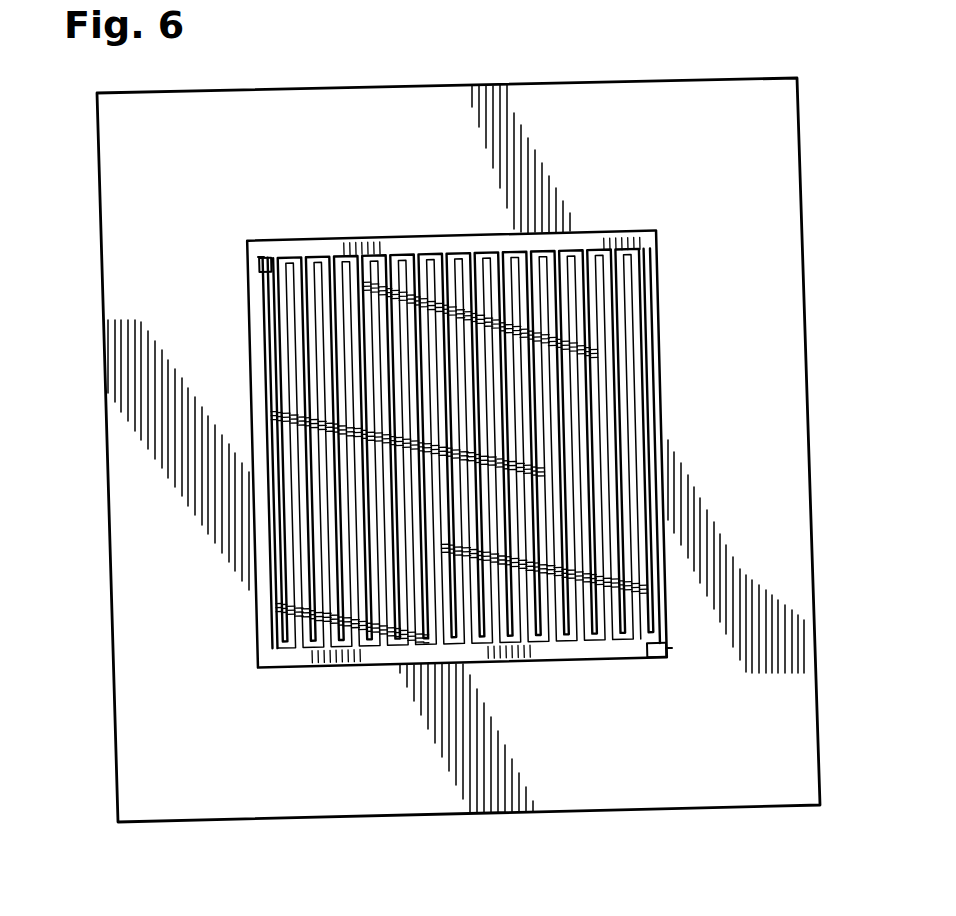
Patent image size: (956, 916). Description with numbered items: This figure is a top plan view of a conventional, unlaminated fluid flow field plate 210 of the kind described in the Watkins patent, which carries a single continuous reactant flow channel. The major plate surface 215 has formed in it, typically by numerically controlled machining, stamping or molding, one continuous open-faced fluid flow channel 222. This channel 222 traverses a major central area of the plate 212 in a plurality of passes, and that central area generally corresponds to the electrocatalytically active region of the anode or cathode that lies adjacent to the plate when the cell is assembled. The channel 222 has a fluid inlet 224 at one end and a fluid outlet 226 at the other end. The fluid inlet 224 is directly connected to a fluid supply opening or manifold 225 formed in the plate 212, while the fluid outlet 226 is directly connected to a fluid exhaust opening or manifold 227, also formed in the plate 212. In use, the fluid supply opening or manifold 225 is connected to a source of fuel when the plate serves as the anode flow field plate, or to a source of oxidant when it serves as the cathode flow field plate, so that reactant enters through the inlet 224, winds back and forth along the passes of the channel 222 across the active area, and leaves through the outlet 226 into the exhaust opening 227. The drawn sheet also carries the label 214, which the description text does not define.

The fluid flow field plate 210 is at (692, 74).
The plate 212 is at (776, 133).
The sensing element substrate 214 is at (301, 668).
The major plate surface 215 is at (777, 510).
The fluid flow channel 222 is at (400, 256).
The fluid inlet 224 is at (258, 257).
The fluid supply opening or manifold 225 is at (269, 256).
The fluid outlet 226 is at (672, 648).
The fluid exhaust opening or manifold 227 is at (647, 662).